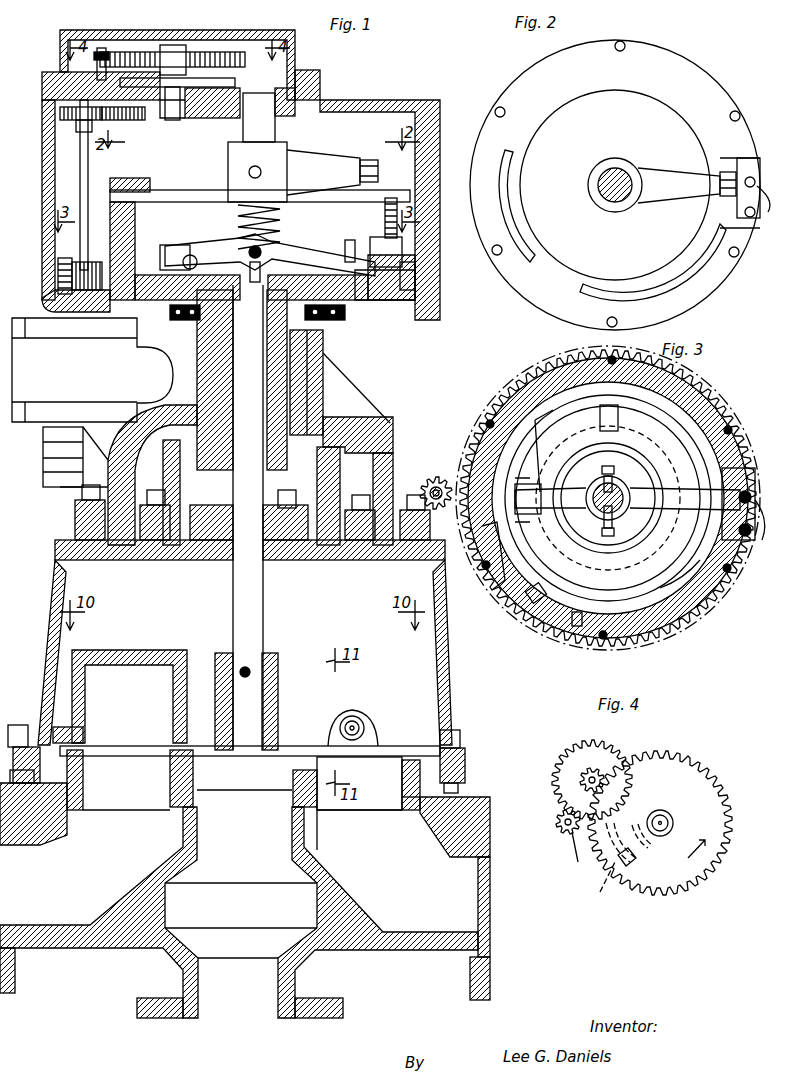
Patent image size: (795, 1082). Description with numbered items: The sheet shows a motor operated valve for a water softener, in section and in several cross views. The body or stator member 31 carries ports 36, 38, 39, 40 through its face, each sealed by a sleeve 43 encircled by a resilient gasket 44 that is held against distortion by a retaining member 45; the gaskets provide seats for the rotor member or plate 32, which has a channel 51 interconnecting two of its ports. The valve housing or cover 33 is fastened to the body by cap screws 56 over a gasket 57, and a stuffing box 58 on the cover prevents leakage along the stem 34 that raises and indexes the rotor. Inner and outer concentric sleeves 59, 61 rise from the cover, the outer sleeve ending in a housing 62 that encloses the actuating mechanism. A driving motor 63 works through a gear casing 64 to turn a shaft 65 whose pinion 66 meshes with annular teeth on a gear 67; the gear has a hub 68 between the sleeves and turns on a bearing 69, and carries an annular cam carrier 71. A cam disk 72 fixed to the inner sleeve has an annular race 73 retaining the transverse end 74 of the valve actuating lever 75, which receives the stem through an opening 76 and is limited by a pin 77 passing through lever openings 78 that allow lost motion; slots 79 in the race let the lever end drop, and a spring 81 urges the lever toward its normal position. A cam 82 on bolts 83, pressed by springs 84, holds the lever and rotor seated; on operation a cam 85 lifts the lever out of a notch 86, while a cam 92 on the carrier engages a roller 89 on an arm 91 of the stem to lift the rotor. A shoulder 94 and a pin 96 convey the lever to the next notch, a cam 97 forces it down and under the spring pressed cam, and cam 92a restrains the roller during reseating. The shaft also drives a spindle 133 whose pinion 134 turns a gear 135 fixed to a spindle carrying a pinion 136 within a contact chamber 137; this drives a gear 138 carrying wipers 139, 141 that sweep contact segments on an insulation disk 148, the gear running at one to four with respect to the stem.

In FIG. 1, the body or stator member 31 is at (482, 824).
In FIG. 1, the rotor member or plate 32 is at (386, 724).
In FIG. 1, the valve housing or cover 33 is at (456, 638).
In FIG. 1, the stem 34 is at (248, 517).
In FIG. 2, the stem 34 is at (620, 168).
In FIG. 3, the stem 34 is at (598, 486).
In FIG. 1, the port 36 is at (312, 810).
In FIG. 1, the port 38 is at (108, 800).
In FIG. 1, the port 39 is at (273, 812).
In FIG. 1, the port 40 is at (272, 738).
In FIG. 1, the sleeve 43 is at (400, 805).
In FIG. 1, the gasket 44 is at (365, 800).
In FIG. 1, the retaining member 45 is at (359, 783).
In FIG. 1, the channel 51 is at (120, 696).
In FIG. 1, the cap screws 56 is at (458, 738).
In FIG. 1, the gasket 57 is at (460, 784).
In FIG. 1, the stuffing box 58 is at (215, 570).
In FIG. 1, the inner sleeve 59 is at (300, 386).
In FIG. 1, the outer sleeve 61 is at (325, 356).
In FIG. 1, the housing 62 is at (430, 120).
In FIG. 1, the driving motor 63 is at (50, 436).
In FIG. 1, the gear casing 64 is at (92, 370).
In FIG. 1, the shaft 65 is at (75, 305).
In FIG. 3, the shaft 65 is at (442, 484).
In FIG. 1, the pinion 66 is at (60, 280).
In FIG. 3, the pinion 66 is at (430, 480).
In FIG. 1, the gear 67 is at (405, 286).
In FIG. 3, the gear 67 is at (478, 438).
In FIG. 1, the hub 68 is at (300, 412).
In FIG. 1, the bearing 69 is at (320, 328).
In FIG. 1, the annular cam carrier 71 is at (112, 197).
In FIG. 2, the annular cam carrier 71 is at (652, 58).
In FIG. 1, the cam disk 72 is at (355, 312).
In FIG. 3, the cam disk 72 is at (668, 444).
In FIG. 1, the annular race 73 is at (188, 256).
In FIG. 3, the annular race 73 is at (612, 518).
In FIG. 1, the transverse end 74 is at (160, 255).
In FIG. 3, the transverse end 74 is at (518, 500).
In FIG. 1, the valve actuating lever 75 is at (306, 252).
In FIG. 3, the valve actuating lever 75 is at (628, 478).
In FIG. 3, the opening 76 is at (640, 490).
In FIG. 1, the pin 77 is at (262, 250).
In FIG. 3, the pin 77 is at (612, 466).
In FIG. 1, the lever openings 78 is at (256, 268).
In FIG. 3, the slots 79 is at (595, 410).
In FIG. 1, the spring 81 is at (238, 214).
In FIG. 1, the cam 82 is at (410, 268).
In FIG. 2, the cam 82 is at (755, 156).
In FIG. 3, the cam 82 is at (752, 470).
In FIG. 1, the bolts 83 is at (386, 252).
In FIG. 2, the bolts 83 is at (758, 220).
In FIG. 3, the bolts 83 is at (752, 534).
In FIG. 1, the springs 84 is at (400, 212).
In FIG. 3, the cam 85 is at (510, 588).
In FIG. 1, the notch 86 is at (350, 246).
In FIG. 1, the roller 89 is at (370, 160).
In FIG. 2, the roller 89 is at (722, 202).
In FIG. 1, the arm 91 is at (312, 152).
In FIG. 2, the arm 91 is at (658, 170).
In FIG. 1, the cam 92 is at (146, 190).
In FIG. 2, the cam 92 is at (507, 178).
In FIG. 2, the cam 92a is at (610, 292).
In FIG. 3, the shoulder 94 is at (538, 618).
In FIG. 3, the pin 96 is at (578, 628).
In FIG. 3, the cam 97 is at (700, 592).
In FIG. 1, the spindle 133 is at (80, 160).
In FIG. 4, the spindle 133 is at (562, 832).
In FIG. 1, the pinion 134 is at (62, 114).
In FIG. 4, the pinion 134 is at (574, 836).
In FIG. 1, the gear 135 is at (130, 120).
In FIG. 4, the gear 135 is at (580, 752).
In FIG. 1, the pinion 136 is at (104, 50).
In FIG. 4, the pinion 136 is at (598, 772).
In FIG. 1, the contact chamber 137 is at (238, 42).
In FIG. 1, the gear 138 is at (197, 56).
In FIG. 4, the gear 138 is at (703, 776).
In FIG. 4, the wiper 139 is at (610, 880).
In FIG. 4, the wiper 141 is at (648, 852).
In FIG. 1, the insulation disk 148 is at (236, 84).